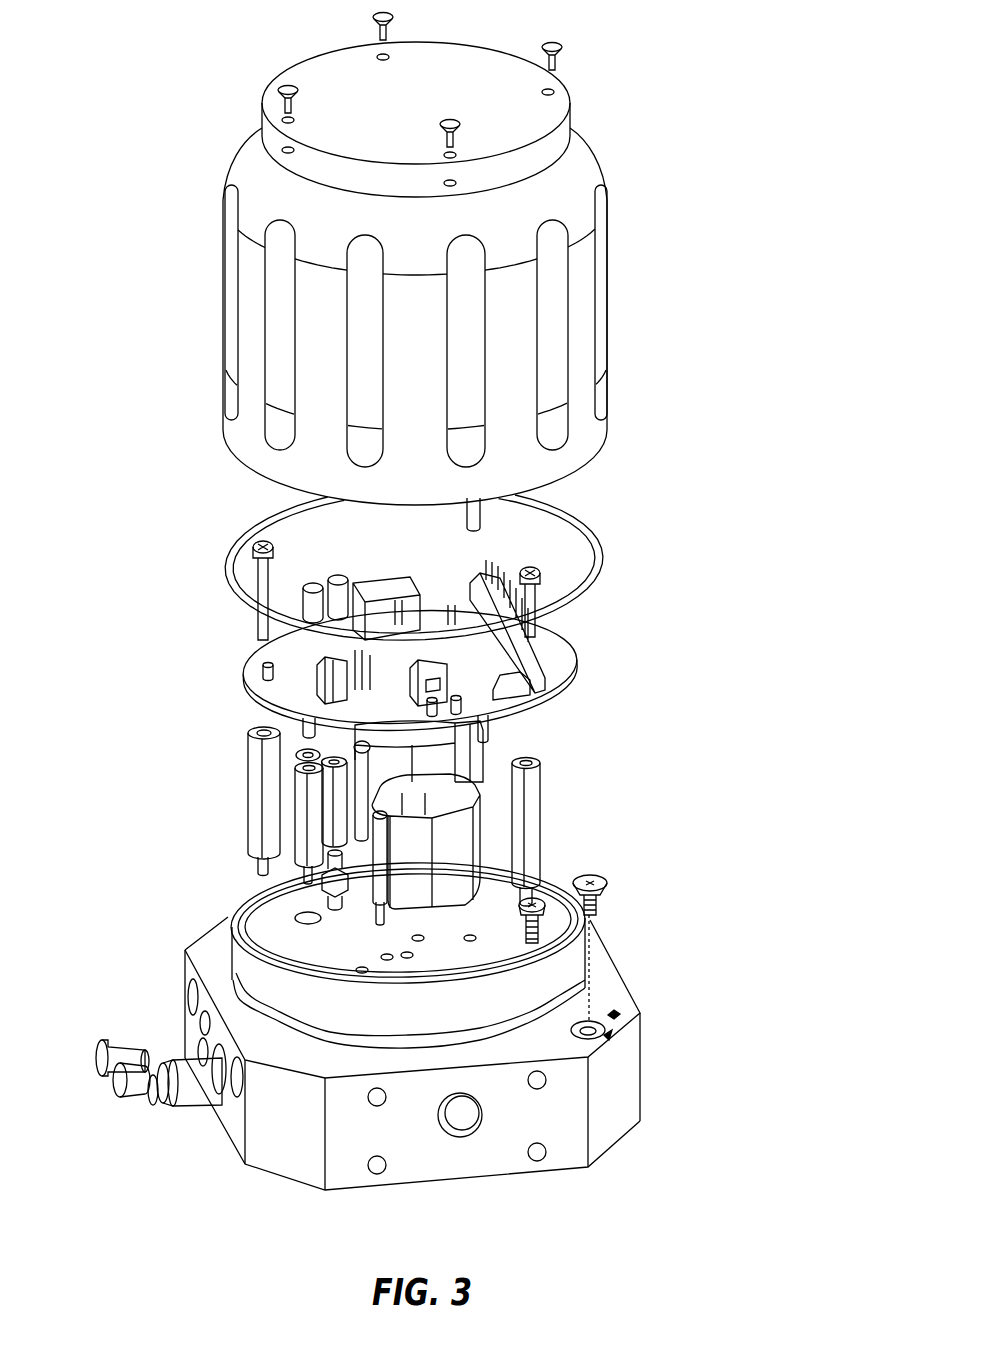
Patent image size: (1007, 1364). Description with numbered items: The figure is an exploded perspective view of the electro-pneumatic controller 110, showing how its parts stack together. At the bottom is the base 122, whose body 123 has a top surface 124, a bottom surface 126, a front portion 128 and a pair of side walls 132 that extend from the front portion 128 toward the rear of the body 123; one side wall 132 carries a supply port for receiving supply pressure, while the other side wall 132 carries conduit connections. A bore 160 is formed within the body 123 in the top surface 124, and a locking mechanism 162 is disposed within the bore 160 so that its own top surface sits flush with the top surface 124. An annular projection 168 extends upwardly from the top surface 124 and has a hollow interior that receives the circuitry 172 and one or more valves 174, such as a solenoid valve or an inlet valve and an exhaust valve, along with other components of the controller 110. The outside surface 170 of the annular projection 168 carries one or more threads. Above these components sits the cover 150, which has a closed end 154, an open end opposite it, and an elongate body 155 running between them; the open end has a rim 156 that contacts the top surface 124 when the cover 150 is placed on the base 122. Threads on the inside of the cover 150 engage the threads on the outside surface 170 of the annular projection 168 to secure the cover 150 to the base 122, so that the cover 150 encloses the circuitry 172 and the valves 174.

The electro-pneumatic controller 110 is at (712, 226).
The base 122 is at (628, 1123).
The body 123 is at (607, 1137).
The top surface 124 is at (310, 1060).
The bottom surface 126 is at (383, 1188).
The front portion 128 is at (400, 1141).
The side walls 132 is at (647, 1078).
The cover 150 is at (583, 352).
The closed end 154 is at (500, 50).
The elongate body 155 is at (253, 320).
The rim 156 is at (263, 475).
The bore 160 is at (603, 1020).
The locking mechanism 162 is at (605, 882).
The annular projection 168 is at (580, 960).
The outside surface 170 is at (247, 965).
The circuitry 172 is at (466, 671).
The valves 174 is at (435, 763).